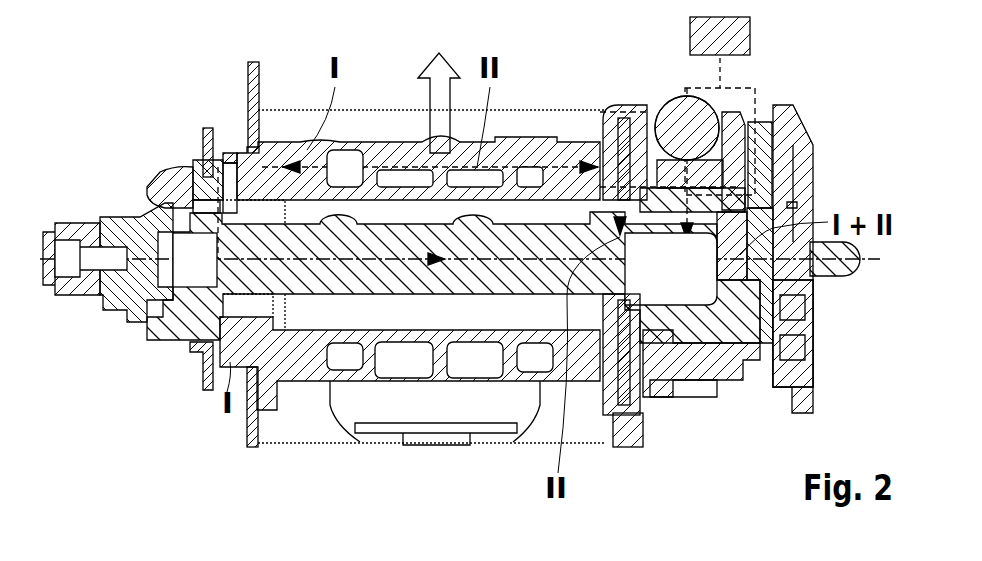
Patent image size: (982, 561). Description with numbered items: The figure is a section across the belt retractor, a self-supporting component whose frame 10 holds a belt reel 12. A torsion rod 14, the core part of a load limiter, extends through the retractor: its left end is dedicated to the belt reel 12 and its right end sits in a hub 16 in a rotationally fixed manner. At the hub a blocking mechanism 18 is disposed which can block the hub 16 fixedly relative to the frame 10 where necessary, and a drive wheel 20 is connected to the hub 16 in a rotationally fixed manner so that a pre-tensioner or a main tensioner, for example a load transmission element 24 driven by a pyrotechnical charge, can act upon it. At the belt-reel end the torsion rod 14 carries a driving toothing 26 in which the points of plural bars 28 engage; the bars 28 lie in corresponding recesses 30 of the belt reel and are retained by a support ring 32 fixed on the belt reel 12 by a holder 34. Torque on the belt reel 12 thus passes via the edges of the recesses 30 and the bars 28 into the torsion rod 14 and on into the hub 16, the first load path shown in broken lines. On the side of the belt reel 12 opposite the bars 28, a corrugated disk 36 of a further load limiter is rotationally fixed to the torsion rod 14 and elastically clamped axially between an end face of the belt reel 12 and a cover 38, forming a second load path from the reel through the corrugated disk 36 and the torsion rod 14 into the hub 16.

The frame 10 is at (315, 423).
The belt reel 12 is at (287, 363).
The torsion rod 14 is at (472, 283).
The hub 16 is at (718, 358).
The blocking mechanism 18 is at (818, 120).
The drive wheel 20 is at (680, 360).
The load transmission element 24 is at (672, 108).
The driving toothing 26 is at (205, 360).
The bars 28 is at (198, 178).
The recesses 30 is at (229, 178).
The support ring 32 is at (213, 127).
The holder 34 is at (147, 188).
The corrugated disk 36 is at (613, 433).
The cover 38 is at (643, 420).